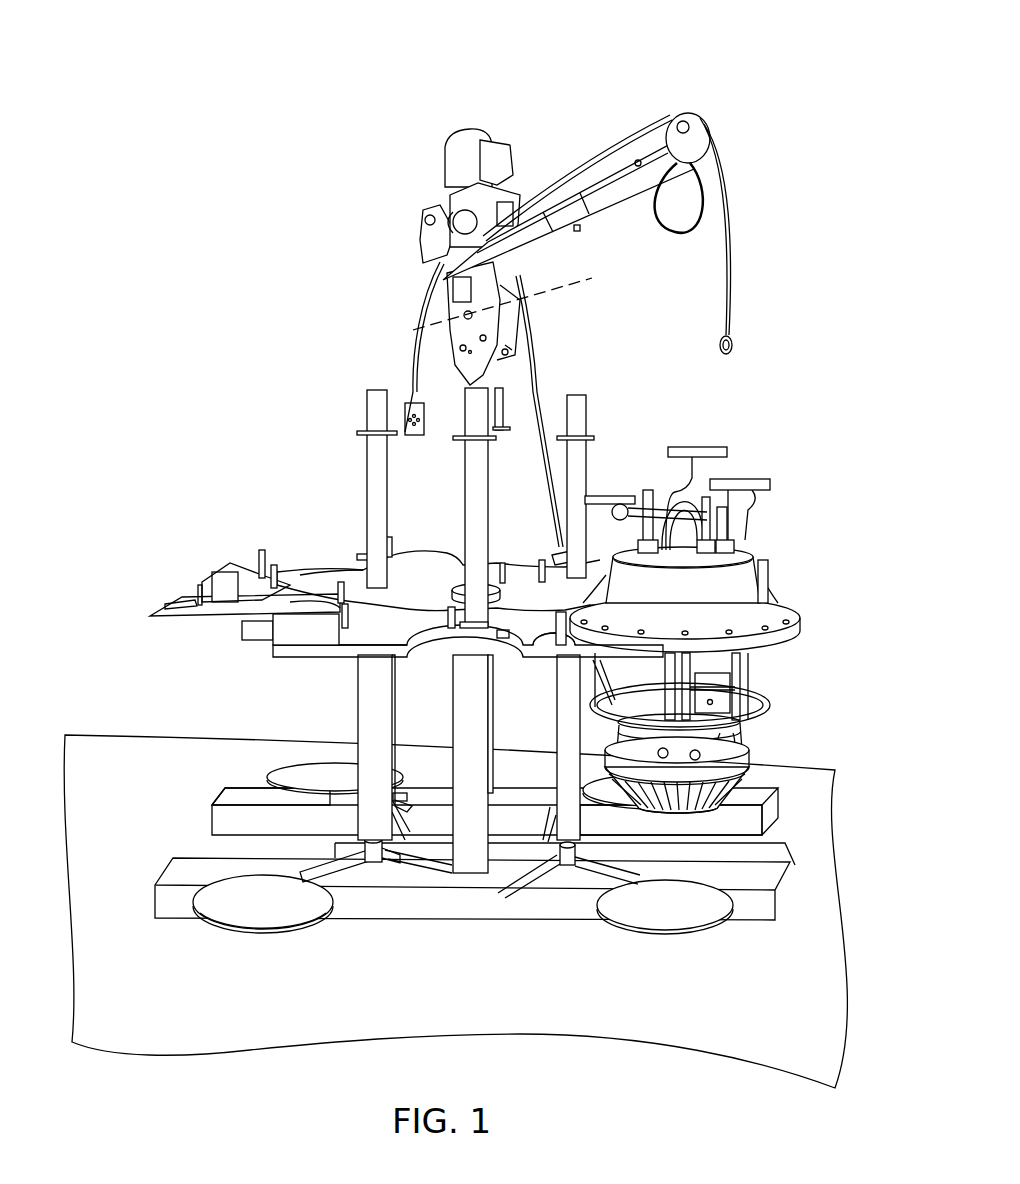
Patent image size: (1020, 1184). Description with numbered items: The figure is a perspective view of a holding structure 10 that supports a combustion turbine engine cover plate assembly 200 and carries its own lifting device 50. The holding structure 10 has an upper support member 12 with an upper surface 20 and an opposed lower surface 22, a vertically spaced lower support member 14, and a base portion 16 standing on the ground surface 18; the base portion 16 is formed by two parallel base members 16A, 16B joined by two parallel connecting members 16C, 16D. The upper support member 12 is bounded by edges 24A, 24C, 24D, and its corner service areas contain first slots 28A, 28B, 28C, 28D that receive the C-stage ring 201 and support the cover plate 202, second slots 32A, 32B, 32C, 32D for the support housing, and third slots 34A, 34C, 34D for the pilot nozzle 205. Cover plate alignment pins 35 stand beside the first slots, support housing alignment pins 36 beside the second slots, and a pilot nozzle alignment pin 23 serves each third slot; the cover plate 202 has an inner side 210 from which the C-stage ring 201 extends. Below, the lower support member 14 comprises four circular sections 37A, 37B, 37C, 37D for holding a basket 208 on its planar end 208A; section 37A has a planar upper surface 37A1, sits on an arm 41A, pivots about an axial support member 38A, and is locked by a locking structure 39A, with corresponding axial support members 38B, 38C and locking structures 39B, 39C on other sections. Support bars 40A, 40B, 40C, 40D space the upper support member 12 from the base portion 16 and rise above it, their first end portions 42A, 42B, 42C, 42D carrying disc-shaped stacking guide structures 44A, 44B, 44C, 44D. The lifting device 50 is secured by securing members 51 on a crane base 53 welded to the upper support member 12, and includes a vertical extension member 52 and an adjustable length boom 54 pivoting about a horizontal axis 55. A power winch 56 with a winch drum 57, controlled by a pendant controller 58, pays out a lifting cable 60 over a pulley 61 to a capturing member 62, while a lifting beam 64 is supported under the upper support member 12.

The holding structure 10 is at (798, 62).
The upper support member 12 is at (333, 567).
The lower support member 14 is at (735, 933).
The base portion 16 is at (132, 905).
The base member 16A is at (170, 910).
The base member 16B is at (238, 800).
The connecting member 16C is at (357, 837).
The connecting member 16D is at (587, 858).
The surface 18 is at (780, 999).
The upper surface 20 is at (430, 554).
The lower surface 22 is at (395, 658).
The pilot nozzle alignment pin 23 is at (560, 628).
The edge 24A is at (323, 652).
The edge 24C is at (392, 556).
The edge 24D is at (210, 577).
The first slot 28A is at (307, 610).
The first slot 28B is at (663, 655).
The first slot 28C is at (740, 588).
The first slot 28D is at (345, 585).
The second slot 32A is at (507, 637).
The second slot 32B is at (770, 592).
The second slot 32C is at (543, 567).
The second slot 32D is at (255, 580).
The third slot 34A is at (523, 645).
The third slot 34C is at (557, 553).
The third slot 34D is at (172, 600).
The cover plate alignment pin 35 is at (262, 552).
The support housing alignment pin 36 is at (275, 567).
The section 37A is at (242, 928).
The planar upper surface 37A1 is at (287, 918).
The section 37B is at (667, 930).
The section 37C is at (623, 805).
The section 37D is at (283, 757).
The axial support member 38A is at (370, 856).
The axial support member 38B is at (565, 864).
The axial support member 38C is at (397, 783).
The locking structure 39A is at (383, 853).
The locking structure 39B is at (540, 862).
The locking structure 39C is at (407, 803).
The support bar 40A is at (473, 777).
The support bar 40B is at (563, 708).
The support bar 40C is at (493, 720).
The support bar 40D is at (382, 730).
The arm 41A is at (350, 870).
The first end portion 42A is at (458, 440).
The first end portion 42B is at (598, 395).
The first end portion 42C is at (512, 440).
The first end portion 42D is at (352, 390).
The stacking guide structure 44A is at (466, 442).
The stacking guide structure 44B is at (595, 443).
The stacking guide structure 44C is at (502, 432).
The stacking guide structure 44D is at (365, 436).
The lifting device 50 is at (415, 258).
The securing member 51 is at (505, 572).
The vertical extension member 52 is at (468, 372).
The crane base 53 is at (457, 586).
The adjustable length boom 54 is at (594, 192).
The horizontal axis 55 is at (553, 284).
The power winch 56 is at (442, 165).
The winch drum 57 is at (452, 222).
The pendant controller 58 is at (408, 437).
The lifting cable 60 is at (728, 236).
The pulley 61 is at (698, 110).
The capturing member 62 is at (733, 349).
The lifting beam 64 is at (250, 637).
The cover plate assembly 200 is at (777, 499).
The C-stage ring 201 is at (752, 664).
The cover plate 202 is at (810, 614).
The pilot nozzle 205 is at (723, 443).
The basket 208 is at (742, 792).
The basket end 208A is at (717, 812).
The inner side 210 is at (722, 650).